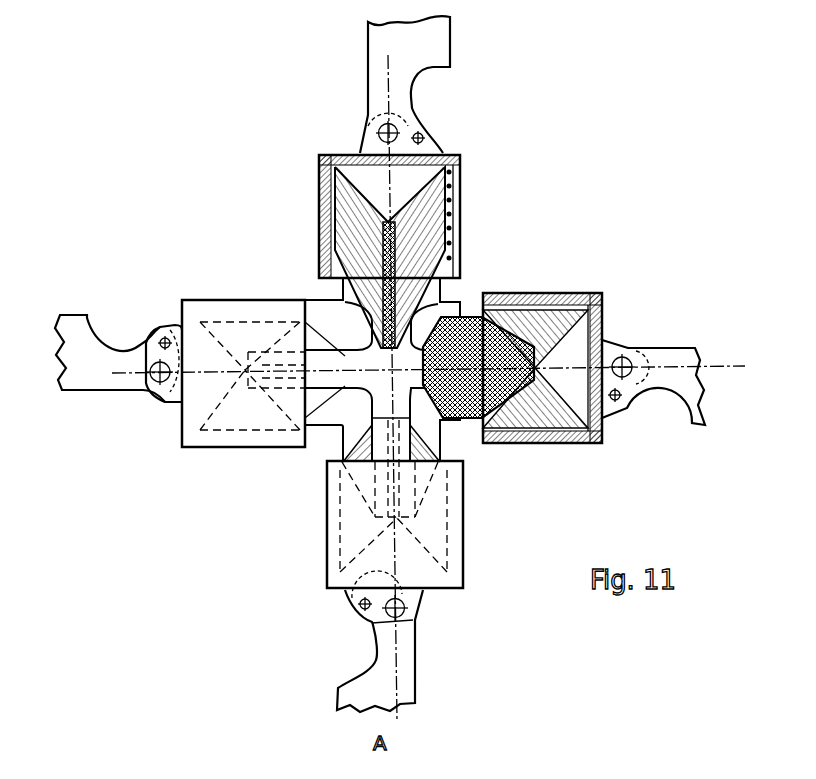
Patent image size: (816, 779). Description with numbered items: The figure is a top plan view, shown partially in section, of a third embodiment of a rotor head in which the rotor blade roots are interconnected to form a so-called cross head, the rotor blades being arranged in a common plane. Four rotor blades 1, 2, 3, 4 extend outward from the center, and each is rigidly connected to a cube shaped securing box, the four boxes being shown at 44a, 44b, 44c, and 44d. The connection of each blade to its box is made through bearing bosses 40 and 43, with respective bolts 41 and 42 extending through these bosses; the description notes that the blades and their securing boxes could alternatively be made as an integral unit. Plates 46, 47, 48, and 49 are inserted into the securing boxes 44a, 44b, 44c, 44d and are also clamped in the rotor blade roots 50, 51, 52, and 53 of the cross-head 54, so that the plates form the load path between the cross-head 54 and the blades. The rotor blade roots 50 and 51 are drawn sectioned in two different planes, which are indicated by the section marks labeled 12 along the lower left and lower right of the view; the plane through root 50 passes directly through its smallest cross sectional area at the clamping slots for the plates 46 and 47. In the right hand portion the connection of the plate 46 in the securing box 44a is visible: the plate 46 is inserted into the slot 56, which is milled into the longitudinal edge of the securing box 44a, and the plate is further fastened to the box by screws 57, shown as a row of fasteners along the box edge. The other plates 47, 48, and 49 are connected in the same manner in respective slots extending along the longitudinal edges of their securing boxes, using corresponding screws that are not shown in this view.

The rotor blade 1 is at (432, 42).
The rotor blade 2 is at (678, 365).
The rotor blade 3 is at (390, 679).
The rotor blade 4 is at (75, 330).
The section line 12 is at (190, 512).
The bearing boss 40 is at (403, 128).
The bolt 41 is at (380, 127).
The bolt 42 is at (426, 138).
The bearing boss 43 is at (367, 150).
The securing box 44a is at (322, 220).
The securing box 44b is at (590, 302).
The securing box 44c is at (397, 553).
The securing box 44d is at (250, 372).
The plate 46 is at (460, 228).
The plate 47 is at (322, 205).
The plate 48 is at (540, 303).
The plate 49 is at (545, 420).
The rotor blade root 50 is at (322, 258).
The rotor blade root 51 is at (518, 292).
The rotor blade root 52 is at (392, 470).
The rotor blade root 53 is at (377, 382).
The cross-head 54 is at (352, 302).
The slot 56 is at (456, 200).
The screws 57 is at (453, 258).